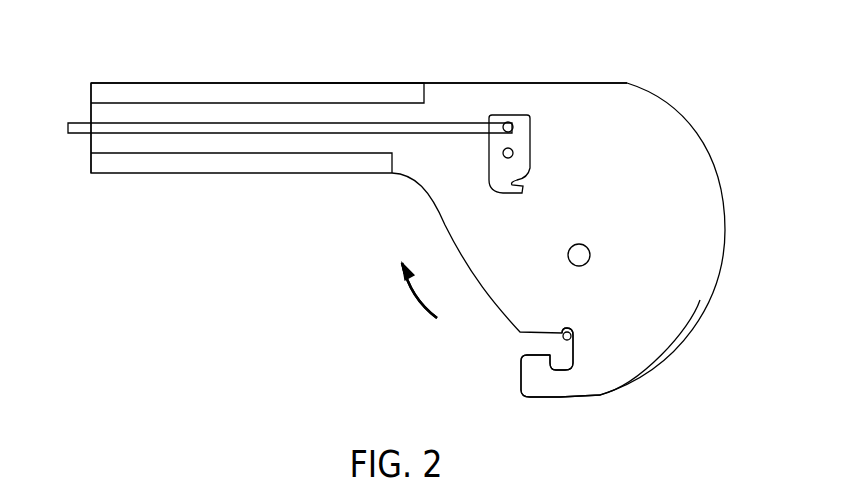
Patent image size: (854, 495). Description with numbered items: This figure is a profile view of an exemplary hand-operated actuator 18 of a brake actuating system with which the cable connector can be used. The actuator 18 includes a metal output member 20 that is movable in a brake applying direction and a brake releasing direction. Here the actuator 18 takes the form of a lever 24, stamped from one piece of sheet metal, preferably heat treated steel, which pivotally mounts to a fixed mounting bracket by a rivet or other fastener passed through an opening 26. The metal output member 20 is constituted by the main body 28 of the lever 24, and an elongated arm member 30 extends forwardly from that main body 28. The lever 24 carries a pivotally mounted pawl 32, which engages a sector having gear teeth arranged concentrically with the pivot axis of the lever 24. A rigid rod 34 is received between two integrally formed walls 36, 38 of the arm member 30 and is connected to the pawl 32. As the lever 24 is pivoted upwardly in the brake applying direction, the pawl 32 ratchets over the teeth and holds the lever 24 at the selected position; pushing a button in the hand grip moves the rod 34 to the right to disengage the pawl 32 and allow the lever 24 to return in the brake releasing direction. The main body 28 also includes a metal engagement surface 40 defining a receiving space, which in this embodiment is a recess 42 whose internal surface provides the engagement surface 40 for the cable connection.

The actuator 18 is at (303, 302).
The metal output member 20 is at (685, 287).
The lever 24 is at (457, 95).
The opening 26 is at (585, 253).
The main body 28 is at (648, 345).
The arm member 30 is at (170, 82).
The pawl 32 is at (500, 165).
The rod 34 is at (118, 128).
The wall 36 is at (225, 162).
The wall 38 is at (275, 95).
The engagement surface 40 is at (573, 335).
The recess 42 is at (563, 362).